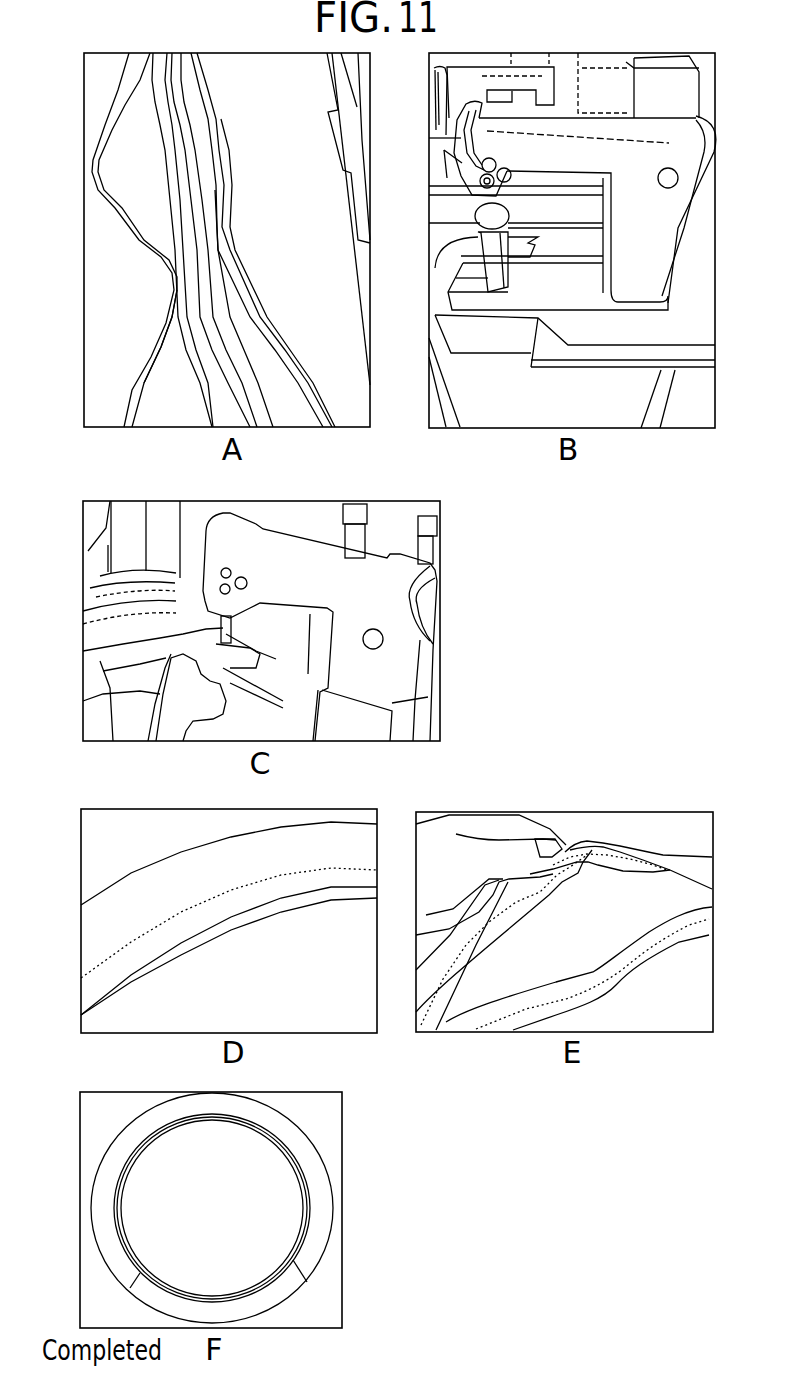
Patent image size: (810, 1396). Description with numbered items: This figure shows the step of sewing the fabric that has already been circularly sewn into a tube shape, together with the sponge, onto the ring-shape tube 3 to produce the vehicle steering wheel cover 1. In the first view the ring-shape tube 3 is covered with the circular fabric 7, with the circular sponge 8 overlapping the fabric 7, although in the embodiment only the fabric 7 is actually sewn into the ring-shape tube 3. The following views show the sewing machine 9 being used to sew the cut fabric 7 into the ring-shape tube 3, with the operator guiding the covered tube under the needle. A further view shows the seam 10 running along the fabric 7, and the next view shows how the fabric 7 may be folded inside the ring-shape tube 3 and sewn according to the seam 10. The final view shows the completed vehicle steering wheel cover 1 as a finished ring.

The vehicle steering wheel cover 1 is at (110, 1252).
The ring-shape tube 3 is at (180, 147).
The fabric 7 is at (162, 265).
The sponge 8 is at (164, 372).
The sewing machine 9 is at (607, 130).
The seam 10 is at (153, 927).